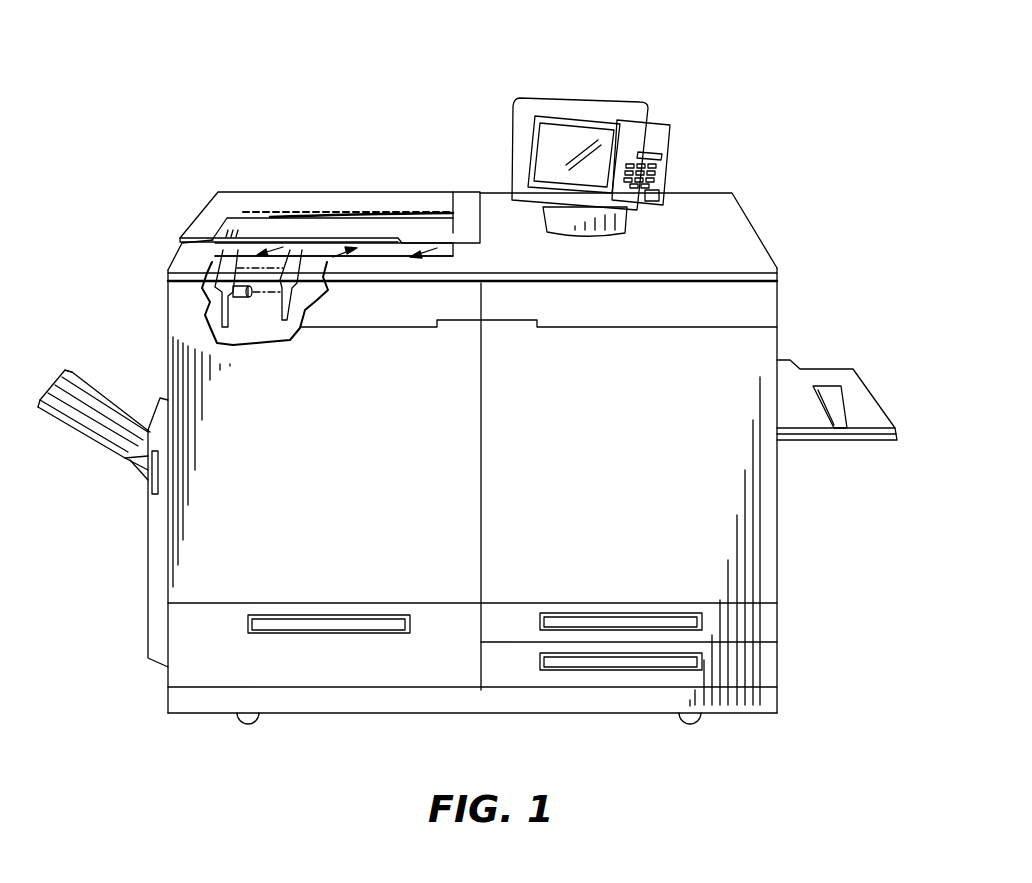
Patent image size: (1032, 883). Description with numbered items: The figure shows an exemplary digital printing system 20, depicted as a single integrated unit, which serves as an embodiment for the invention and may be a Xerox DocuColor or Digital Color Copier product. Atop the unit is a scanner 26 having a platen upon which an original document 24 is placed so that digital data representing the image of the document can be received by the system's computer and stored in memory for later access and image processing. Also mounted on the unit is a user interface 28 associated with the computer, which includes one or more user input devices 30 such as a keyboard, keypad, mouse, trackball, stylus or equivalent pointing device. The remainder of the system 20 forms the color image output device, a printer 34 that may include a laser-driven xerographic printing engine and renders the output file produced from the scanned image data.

The digital printing system 20 is at (124, 613).
The original document 24 is at (200, 250).
The scanner 26 is at (477, 178).
The user interface 28 is at (545, 88).
The user input device 30 is at (648, 130).
The printer 34 is at (855, 317).